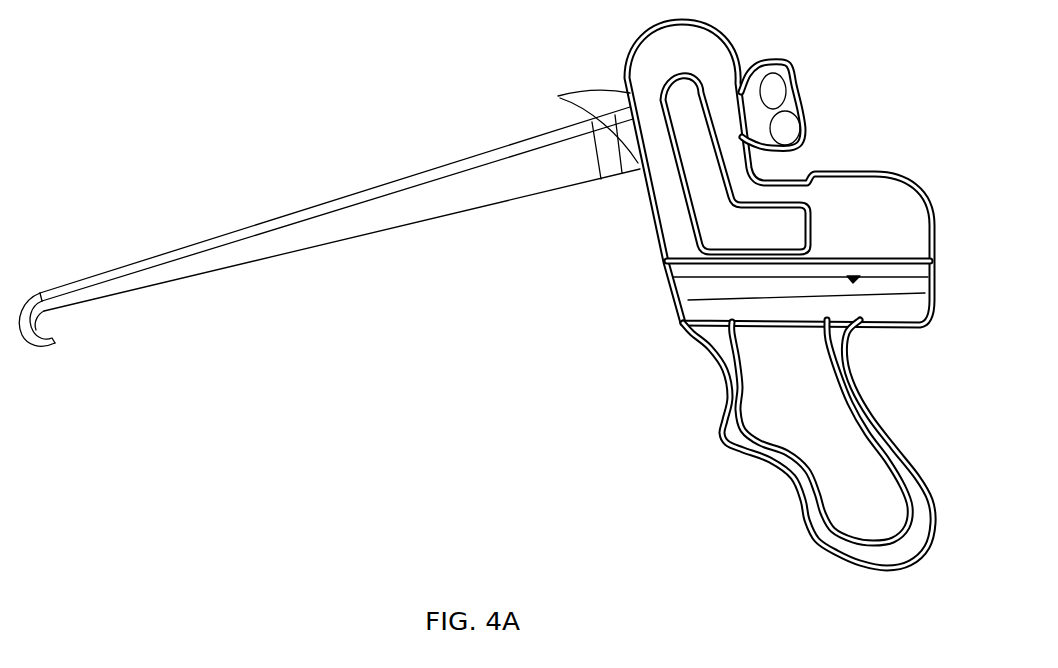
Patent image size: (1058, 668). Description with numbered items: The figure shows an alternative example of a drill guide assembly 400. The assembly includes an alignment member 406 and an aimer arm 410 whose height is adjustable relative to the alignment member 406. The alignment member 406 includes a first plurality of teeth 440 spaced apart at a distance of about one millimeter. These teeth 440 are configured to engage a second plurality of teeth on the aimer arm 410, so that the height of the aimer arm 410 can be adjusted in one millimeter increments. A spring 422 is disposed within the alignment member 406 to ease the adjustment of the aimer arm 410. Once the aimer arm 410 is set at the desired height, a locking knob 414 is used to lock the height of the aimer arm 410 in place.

The drill guide assembly 400 is at (476, 287).
The alignment member 406 is at (647, 60).
The aimer arm 410 is at (308, 240).
The locking knob 414 is at (777, 85).
The spring 422 is at (697, 127).
The first plurality of teeth 440 is at (560, 98).